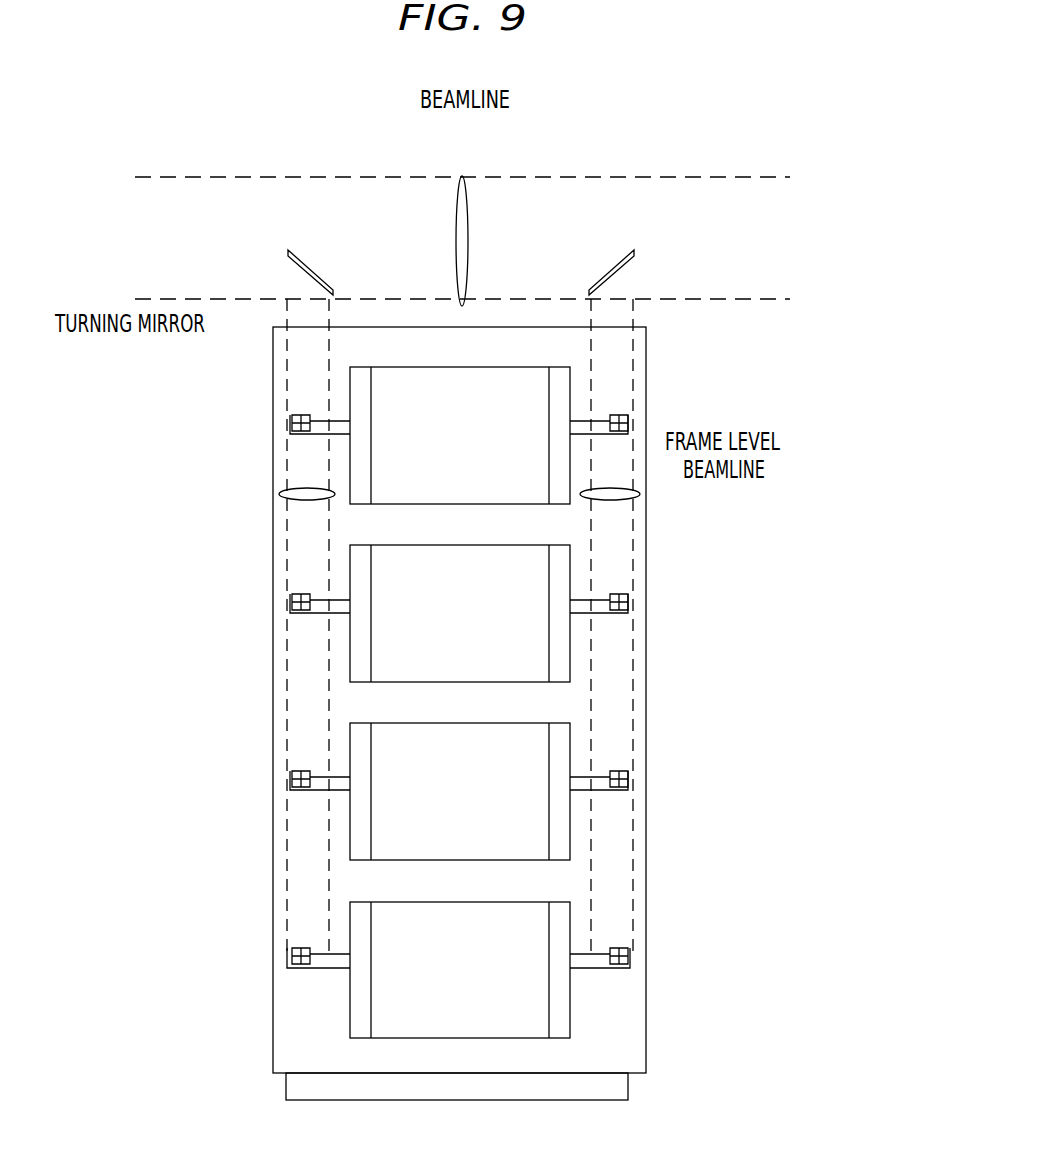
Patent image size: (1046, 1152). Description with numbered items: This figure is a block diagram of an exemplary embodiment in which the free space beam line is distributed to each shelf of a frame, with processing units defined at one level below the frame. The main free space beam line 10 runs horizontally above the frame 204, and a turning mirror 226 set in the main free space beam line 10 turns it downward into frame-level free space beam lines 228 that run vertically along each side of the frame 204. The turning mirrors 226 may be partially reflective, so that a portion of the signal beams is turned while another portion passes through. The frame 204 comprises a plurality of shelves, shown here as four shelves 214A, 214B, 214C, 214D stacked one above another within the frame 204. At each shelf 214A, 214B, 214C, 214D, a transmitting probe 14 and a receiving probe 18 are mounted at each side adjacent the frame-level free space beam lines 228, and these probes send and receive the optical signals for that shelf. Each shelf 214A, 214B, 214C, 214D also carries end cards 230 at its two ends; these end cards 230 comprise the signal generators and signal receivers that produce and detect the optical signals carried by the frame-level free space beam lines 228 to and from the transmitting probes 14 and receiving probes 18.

The free space beam line 10 is at (462, 176).
The transmitting probe 14 is at (305, 417).
The receiving probe 18 is at (292, 420).
The frame 204 is at (280, 1073).
The shelf 214A is at (462, 502).
The shelf 214B is at (462, 680).
The shelf 214C is at (462, 858).
The shelf 214D is at (462, 1036).
The turning mirror 226 is at (308, 271).
The frame-level free space beam line 228 is at (280, 494).
The end card 230 is at (360, 375).